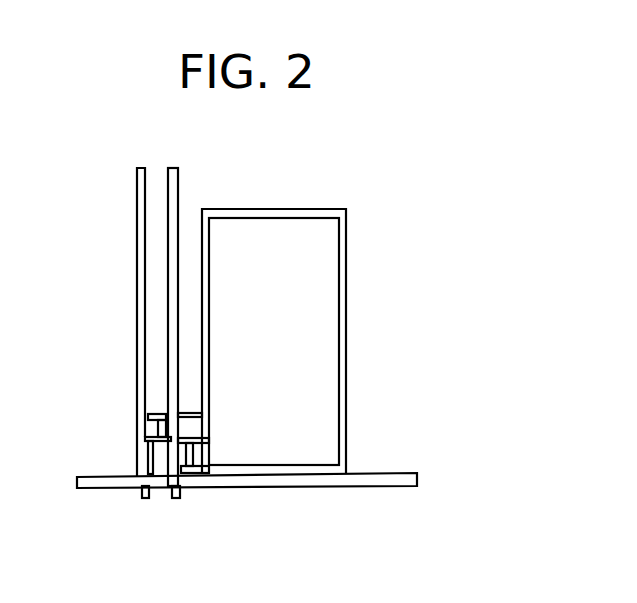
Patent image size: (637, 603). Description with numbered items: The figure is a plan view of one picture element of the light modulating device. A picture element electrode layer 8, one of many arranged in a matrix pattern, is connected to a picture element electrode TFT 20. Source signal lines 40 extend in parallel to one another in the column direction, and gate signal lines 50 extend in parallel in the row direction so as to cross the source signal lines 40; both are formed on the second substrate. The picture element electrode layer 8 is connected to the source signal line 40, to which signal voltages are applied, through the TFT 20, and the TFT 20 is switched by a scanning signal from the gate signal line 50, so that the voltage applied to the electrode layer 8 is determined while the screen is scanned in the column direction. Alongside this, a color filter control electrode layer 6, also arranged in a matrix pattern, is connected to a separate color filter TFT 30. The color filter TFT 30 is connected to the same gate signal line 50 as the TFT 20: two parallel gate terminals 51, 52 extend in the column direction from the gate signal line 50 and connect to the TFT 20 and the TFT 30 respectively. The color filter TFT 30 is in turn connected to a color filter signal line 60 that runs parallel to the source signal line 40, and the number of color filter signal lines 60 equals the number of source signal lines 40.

The color filter control electrode layer 6 is at (345, 339).
The picture element electrode layer 8 is at (327, 382).
The picture element electrode TFT 20 is at (193, 437).
The color filter TFT 30 is at (162, 402).
The source signal line 40 is at (178, 206).
The gate signal line 50 is at (373, 473).
The gate terminal 51 is at (188, 486).
The gate terminal 52 is at (156, 461).
The color filter signal line 60 is at (147, 188).